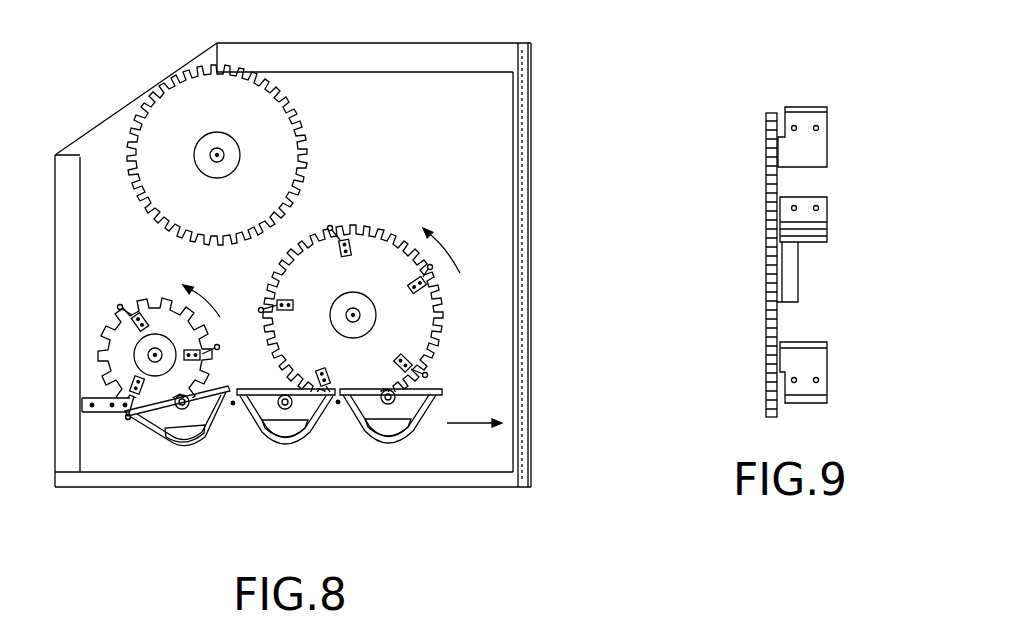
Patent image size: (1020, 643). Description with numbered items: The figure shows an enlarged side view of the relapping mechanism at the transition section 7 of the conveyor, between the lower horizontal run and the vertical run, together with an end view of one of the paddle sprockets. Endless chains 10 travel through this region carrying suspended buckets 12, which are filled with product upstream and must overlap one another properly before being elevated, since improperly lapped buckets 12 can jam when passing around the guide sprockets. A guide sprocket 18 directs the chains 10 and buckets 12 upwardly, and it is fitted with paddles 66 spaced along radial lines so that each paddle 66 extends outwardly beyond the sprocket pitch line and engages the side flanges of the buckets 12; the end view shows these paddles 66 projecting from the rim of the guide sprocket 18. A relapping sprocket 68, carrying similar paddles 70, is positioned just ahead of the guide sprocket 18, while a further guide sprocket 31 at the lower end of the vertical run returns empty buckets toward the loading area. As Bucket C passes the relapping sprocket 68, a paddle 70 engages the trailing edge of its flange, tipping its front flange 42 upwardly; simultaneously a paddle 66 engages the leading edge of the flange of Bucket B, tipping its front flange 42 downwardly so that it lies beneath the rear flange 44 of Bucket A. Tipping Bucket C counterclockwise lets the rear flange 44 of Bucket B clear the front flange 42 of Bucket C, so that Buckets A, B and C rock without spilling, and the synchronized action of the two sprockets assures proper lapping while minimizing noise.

In FIG. 8, the transition section 7 is at (537, 148).
In FIG. 8, the guide sprocket 31 is at (300, 127).
In FIG. 8, the guide sprocket 18 is at (372, 232).
In FIG. 9, the guide sprocket 18 is at (766, 185).
In FIG. 8, the relapping sprocket 68 is at (137, 300).
In FIG. 8, the paddle 66 is at (331, 226).
In FIG. 9, the paddle 66 is at (820, 107).
In FIG. 8, the paddle 70 is at (119, 305).
In FIG. 8, the chain 10 is at (110, 414).
In FIG. 8, the rear flange 44 is at (129, 421).
In FIG. 8, the front flange 42 is at (440, 391).
In FIG. 8, the bucket 12 is at (298, 473).
In FIG. 8, the Bucket A is at (415, 420).
In FIG. 8, the Bucket B is at (318, 425).
In FIG. 8, the Bucket C is at (218, 432).